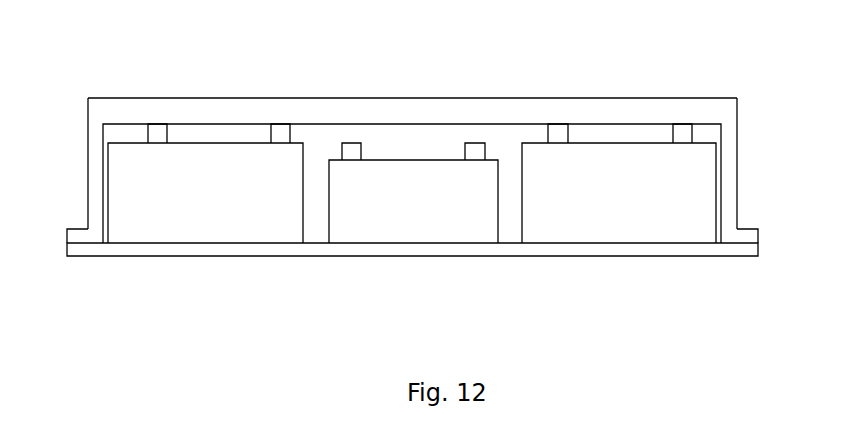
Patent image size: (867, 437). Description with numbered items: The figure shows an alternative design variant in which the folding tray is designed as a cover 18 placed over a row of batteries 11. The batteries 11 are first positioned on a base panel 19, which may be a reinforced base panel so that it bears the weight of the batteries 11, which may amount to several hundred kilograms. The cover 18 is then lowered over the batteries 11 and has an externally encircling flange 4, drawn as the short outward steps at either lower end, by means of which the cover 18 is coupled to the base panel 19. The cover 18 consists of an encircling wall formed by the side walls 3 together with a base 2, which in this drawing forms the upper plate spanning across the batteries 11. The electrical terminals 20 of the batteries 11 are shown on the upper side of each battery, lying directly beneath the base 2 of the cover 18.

The base 2 is at (210, 98).
The side walls 3 is at (96, 142).
The externally encircling flange 4 is at (77, 233).
The batteries 11 is at (228, 215).
The cover 18 is at (554, 106).
The base panel 19 is at (304, 250).
The electrical terminals 20 is at (157, 133).